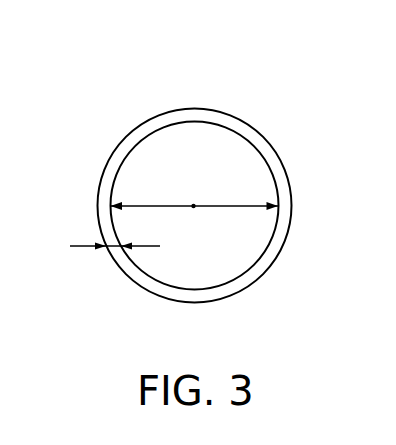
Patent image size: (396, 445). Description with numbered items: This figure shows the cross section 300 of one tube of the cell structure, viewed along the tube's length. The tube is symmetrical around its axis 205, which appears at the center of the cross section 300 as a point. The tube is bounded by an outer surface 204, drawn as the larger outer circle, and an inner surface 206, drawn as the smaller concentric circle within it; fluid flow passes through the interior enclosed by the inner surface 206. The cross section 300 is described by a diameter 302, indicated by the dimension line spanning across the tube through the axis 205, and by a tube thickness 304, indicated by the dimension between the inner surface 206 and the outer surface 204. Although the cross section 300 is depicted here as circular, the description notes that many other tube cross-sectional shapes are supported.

The cross section 300 is at (160, 180).
The outer surface 204 is at (195, 108).
The inner surface 206 is at (208, 286).
The axis 205 is at (193, 206).
The diameter 302 is at (172, 208).
The tube thickness 304 is at (82, 247).